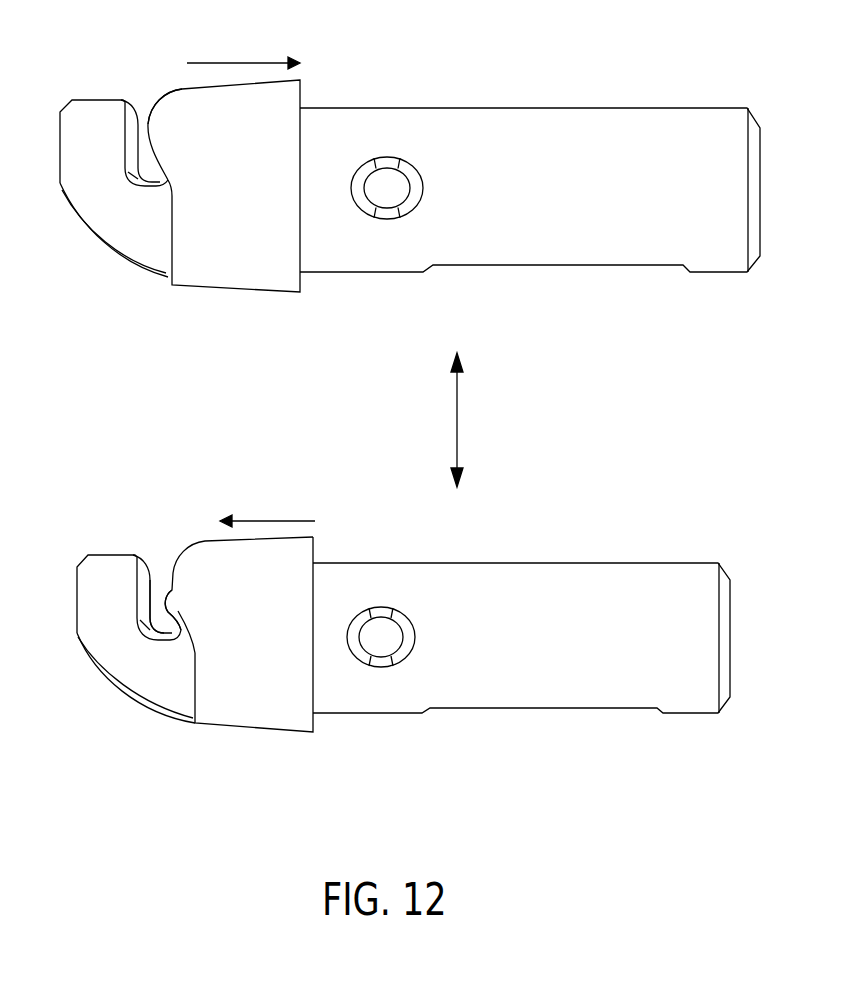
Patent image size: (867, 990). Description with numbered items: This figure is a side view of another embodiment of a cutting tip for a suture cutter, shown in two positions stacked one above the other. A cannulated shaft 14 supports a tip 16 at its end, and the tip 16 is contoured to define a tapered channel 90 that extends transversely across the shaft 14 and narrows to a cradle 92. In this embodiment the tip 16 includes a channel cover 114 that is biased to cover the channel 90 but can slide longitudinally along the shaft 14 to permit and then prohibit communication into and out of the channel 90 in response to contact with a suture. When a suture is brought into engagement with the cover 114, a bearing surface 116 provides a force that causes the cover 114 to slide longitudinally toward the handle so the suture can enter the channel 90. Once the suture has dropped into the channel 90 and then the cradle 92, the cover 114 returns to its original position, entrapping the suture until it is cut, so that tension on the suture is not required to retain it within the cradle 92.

The cannulated shaft 14 is at (538, 196).
The channel cover 114 is at (222, 198).
The tip 16 is at (118, 257).
The bearing surface 116 is at (170, 89).
The channel 90 is at (165, 549).
The cradle 92 is at (153, 643).